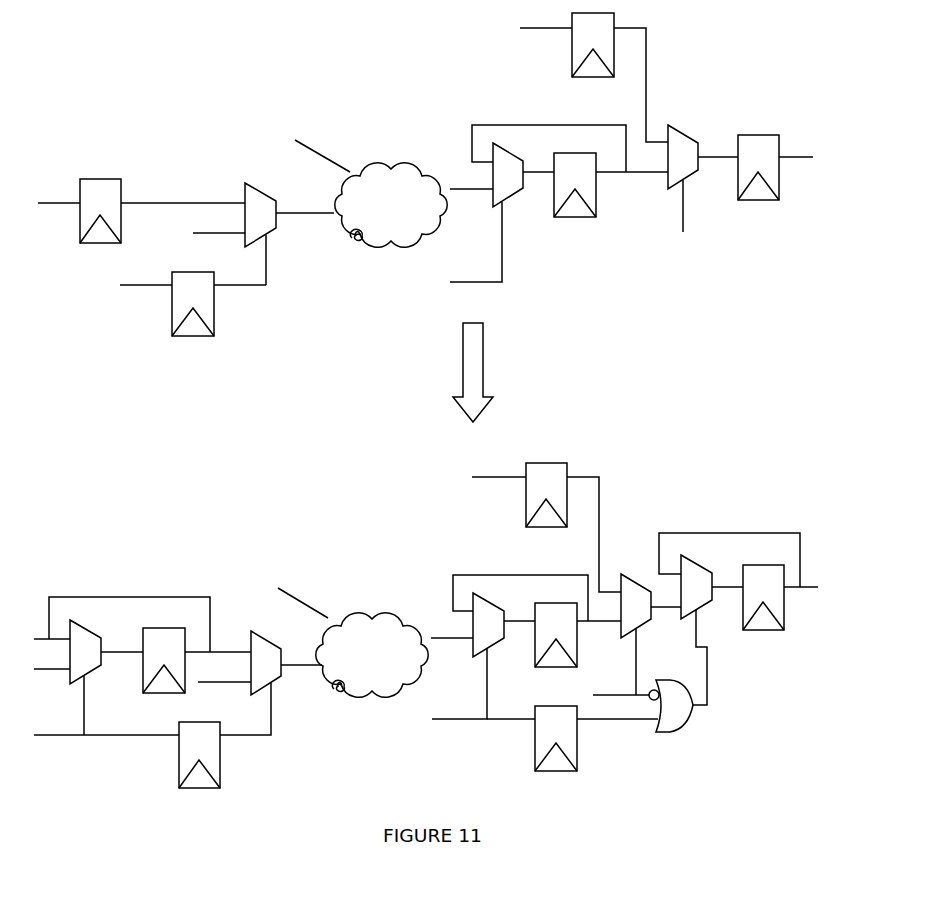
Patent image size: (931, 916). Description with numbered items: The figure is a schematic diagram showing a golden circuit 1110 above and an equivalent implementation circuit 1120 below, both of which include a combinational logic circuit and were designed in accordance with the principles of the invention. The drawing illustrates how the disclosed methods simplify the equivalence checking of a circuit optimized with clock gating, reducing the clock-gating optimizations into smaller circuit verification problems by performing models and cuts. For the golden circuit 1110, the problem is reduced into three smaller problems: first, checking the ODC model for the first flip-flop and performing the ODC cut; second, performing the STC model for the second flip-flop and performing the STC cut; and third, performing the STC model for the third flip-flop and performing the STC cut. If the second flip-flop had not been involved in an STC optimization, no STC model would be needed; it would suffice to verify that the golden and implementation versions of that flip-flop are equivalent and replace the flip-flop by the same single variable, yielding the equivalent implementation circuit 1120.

The golden circuit 1110 is at (155, 56).
The equivalent implementation circuit 1120 is at (162, 506).